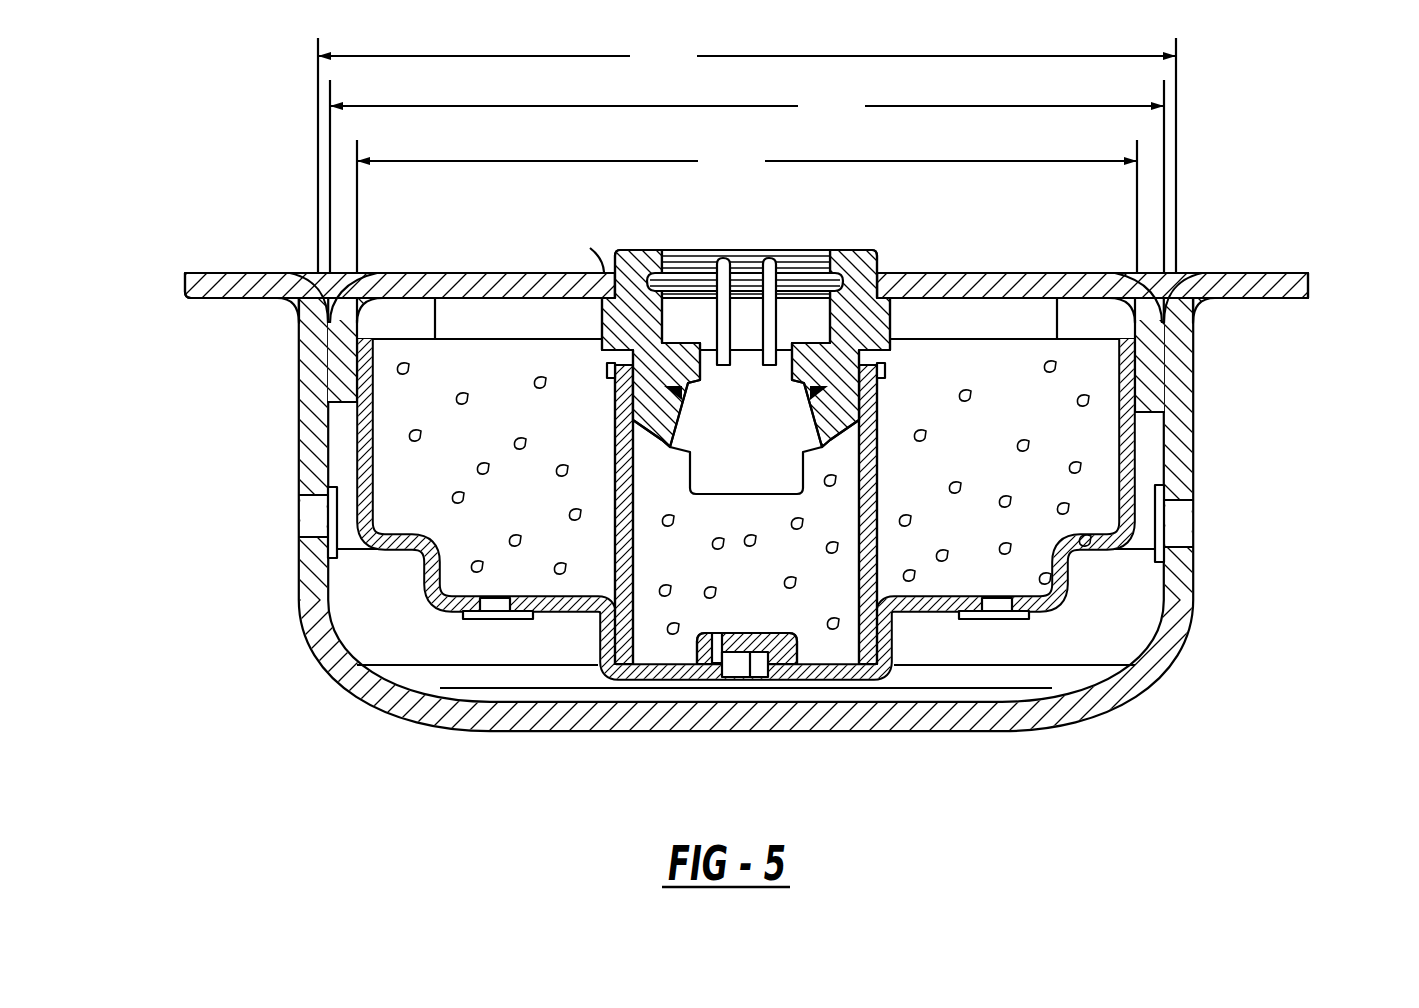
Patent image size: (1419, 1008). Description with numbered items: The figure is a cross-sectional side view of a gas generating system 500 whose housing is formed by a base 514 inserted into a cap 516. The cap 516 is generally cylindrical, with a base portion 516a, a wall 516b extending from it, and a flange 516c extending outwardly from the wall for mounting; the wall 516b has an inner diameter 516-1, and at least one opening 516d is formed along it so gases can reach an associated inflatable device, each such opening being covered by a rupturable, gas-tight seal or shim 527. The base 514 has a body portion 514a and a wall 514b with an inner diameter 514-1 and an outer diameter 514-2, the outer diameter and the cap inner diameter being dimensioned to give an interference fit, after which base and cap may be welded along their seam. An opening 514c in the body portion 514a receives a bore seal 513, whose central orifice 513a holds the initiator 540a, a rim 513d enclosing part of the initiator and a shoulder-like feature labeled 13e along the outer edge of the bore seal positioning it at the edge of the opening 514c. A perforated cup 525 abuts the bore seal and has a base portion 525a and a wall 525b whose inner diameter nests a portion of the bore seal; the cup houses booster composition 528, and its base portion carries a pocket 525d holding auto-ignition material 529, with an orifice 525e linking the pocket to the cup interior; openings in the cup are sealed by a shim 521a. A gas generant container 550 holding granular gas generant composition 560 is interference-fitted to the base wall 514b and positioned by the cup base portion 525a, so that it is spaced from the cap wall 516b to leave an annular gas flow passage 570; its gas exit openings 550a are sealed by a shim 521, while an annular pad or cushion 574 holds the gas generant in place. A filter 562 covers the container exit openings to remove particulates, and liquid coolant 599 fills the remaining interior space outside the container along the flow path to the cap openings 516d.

The gas generating system 500 is at (190, 100).
The cap 516 is at (180, 268).
The base portion 516a is at (373, 683).
The wall 516b is at (310, 582).
The flange 516c is at (218, 283).
The opening 516d is at (307, 510).
The inner diameter 516-1 is at (747, 154).
The base 514 is at (417, 273).
The body portion 514a is at (472, 288).
The wall 514b is at (1148, 392).
The opening 514c is at (604, 262).
The inner diameter 514-1 is at (747, 206).
The outer diameter 514-2 is at (747, 176).
The bore seal 513 is at (884, 251).
The central orifice 513a is at (803, 250).
The rim 513d is at (842, 395).
The valve pins 13e is at (635, 265).
The pad or cushion 574 is at (1192, 304).
The perforated cup 525 is at (620, 685).
The base portion 525a is at (790, 727).
The wall 525b is at (870, 427).
The pocket 525d is at (805, 690).
The orifice 525e is at (757, 672).
The seal or shim 527 is at (1162, 523).
The booster composition 528 is at (722, 555).
The auto-ignition material 529 is at (742, 645).
The initiator 540a is at (722, 462).
The gas generant container 550 is at (1065, 597).
The gas exit openings 550a is at (1010, 613).
The gas generant composition 560 is at (460, 397).
The filter 562 is at (1140, 577).
The annular gas flow passage 570 is at (1145, 443).
The seal or shim 521 is at (1040, 663).
The seal or shim 521a is at (731, 790).
The liquid coolant 599 is at (1045, 695).